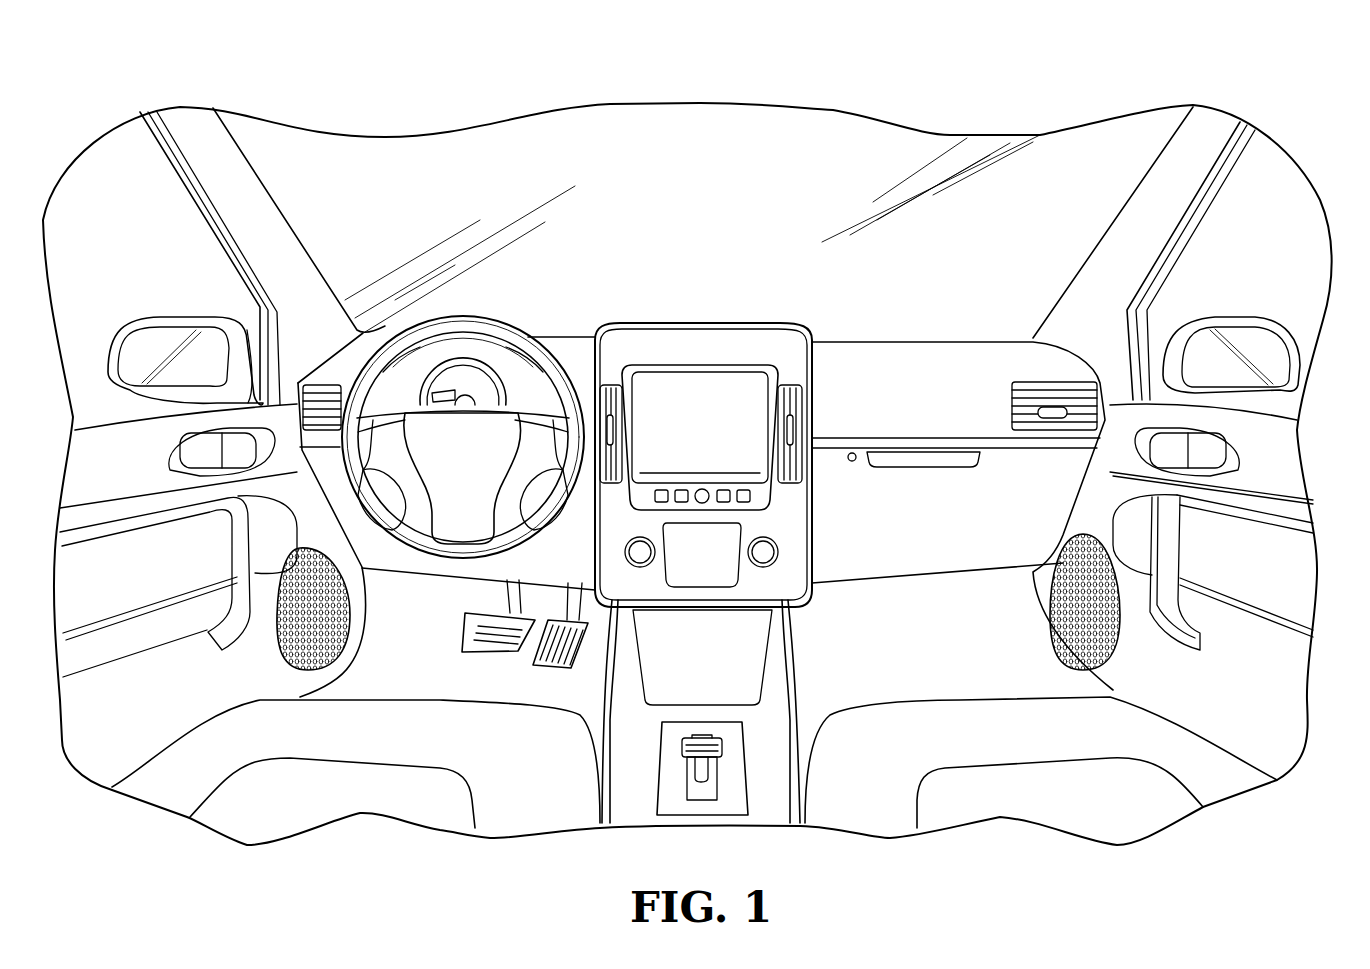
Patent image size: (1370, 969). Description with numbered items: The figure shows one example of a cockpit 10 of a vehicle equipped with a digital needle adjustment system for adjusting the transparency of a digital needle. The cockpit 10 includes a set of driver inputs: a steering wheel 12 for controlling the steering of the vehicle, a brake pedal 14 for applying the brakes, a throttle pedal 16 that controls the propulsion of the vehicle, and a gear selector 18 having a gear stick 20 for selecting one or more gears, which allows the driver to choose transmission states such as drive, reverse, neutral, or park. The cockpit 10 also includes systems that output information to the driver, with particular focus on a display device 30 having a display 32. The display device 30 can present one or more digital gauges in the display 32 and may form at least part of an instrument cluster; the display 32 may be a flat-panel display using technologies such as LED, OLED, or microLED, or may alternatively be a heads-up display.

The cockpit 10 is at (976, 72).
The steering wheel 12 is at (463, 384).
The brake pedal 14 is at (460, 632).
The throttle pedal 16 is at (535, 658).
The gear selector 18 is at (672, 775).
The gear stick 20 is at (722, 748).
The display device 30 is at (474, 382).
The display 32 is at (462, 356).